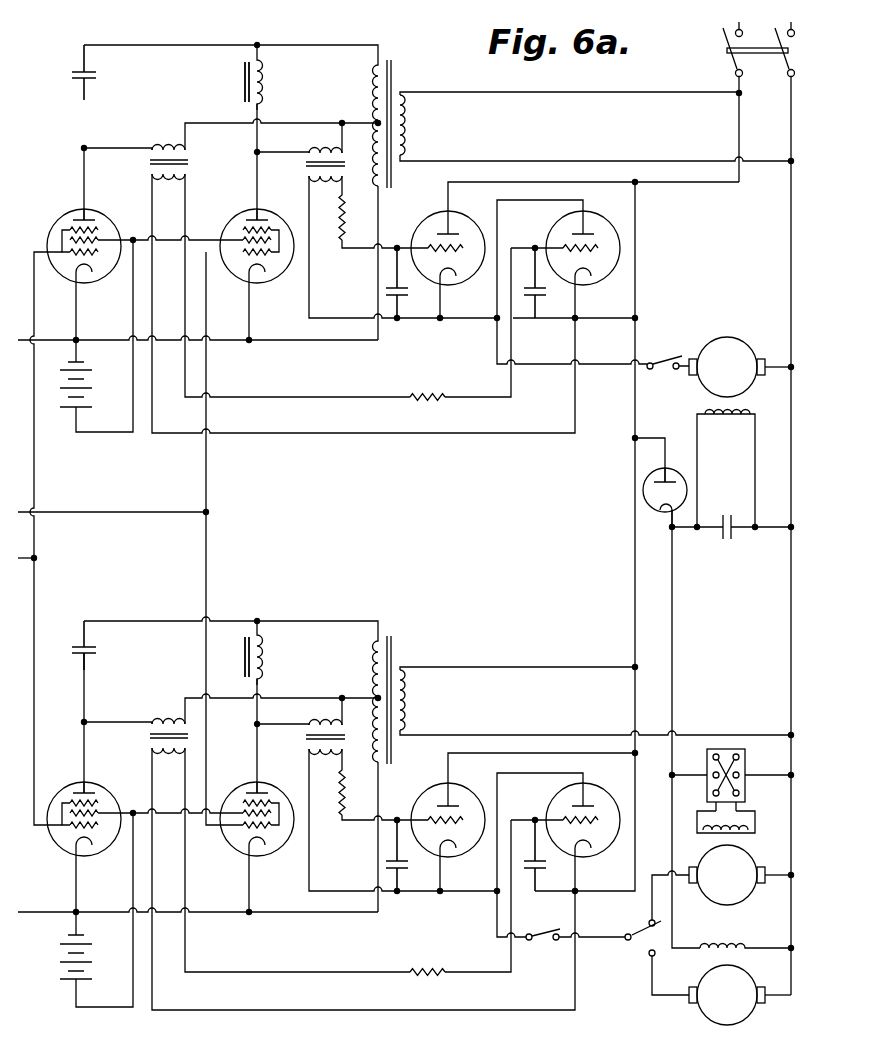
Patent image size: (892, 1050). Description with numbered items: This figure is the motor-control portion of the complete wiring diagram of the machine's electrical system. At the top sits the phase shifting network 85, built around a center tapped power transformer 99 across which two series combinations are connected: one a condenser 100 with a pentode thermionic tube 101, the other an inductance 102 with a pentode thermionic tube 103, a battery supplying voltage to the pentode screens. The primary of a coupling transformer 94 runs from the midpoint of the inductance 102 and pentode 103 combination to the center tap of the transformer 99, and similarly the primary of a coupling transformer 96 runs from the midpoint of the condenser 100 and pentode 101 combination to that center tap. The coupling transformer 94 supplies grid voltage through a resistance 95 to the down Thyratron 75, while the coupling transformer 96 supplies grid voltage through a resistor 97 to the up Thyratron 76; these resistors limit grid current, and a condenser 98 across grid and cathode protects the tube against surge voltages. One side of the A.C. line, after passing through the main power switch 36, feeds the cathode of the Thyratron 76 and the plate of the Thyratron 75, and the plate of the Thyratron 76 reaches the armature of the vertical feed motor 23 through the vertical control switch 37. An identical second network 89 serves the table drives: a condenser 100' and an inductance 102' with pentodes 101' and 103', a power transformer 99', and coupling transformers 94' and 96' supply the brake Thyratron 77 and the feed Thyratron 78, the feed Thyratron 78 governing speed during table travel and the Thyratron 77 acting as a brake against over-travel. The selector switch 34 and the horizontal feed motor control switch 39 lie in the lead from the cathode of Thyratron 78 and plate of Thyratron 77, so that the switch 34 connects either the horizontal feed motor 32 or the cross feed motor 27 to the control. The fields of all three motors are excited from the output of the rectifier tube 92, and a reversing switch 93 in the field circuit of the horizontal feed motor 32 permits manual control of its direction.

The phase shifting network 85 is at (402, 43).
The second amplifier-oscillator unit 89 is at (394, 610).
The condenser 100 is at (67, 72).
The condenser 100' is at (113, 645).
The inductance 102 is at (279, 77).
The inductance 102' is at (281, 653).
The coupling transformer 96 is at (190, 161).
The coupling transformer 96' is at (169, 721).
The coupling transformer 94 is at (309, 168).
The coupling transformer 94' is at (306, 743).
The resistance 95 is at (340, 222).
The center tapped transformer 99 is at (404, 120).
The power transformer 99' is at (408, 697).
The condenser 98 is at (385, 292).
The resistor 97 is at (430, 396).
The pentode thermionic tube 101 is at (82, 264).
The pentode thermionic tube 103 is at (255, 264).
The pentode 101' is at (75, 847).
The pentode 103' is at (247, 847).
The down Thyratron 75 is at (432, 218).
The up Thyratron 76 is at (596, 220).
The brake Thyratron 77 is at (436, 790).
The feed Thyratron 78 is at (594, 797).
The rectifier tube 92 is at (645, 505).
The main power switch 36 is at (736, 64).
The vertical control switch 37 is at (668, 358).
The vertical feed motor 23 is at (764, 332).
The reversing switch 93 is at (748, 786).
The horizontal feed motor 32 is at (744, 904).
The selector switch 34 is at (642, 948).
The cross feed or indexing motor 27 is at (700, 1019).
The horizontal feed motor control switch 39 is at (552, 945).